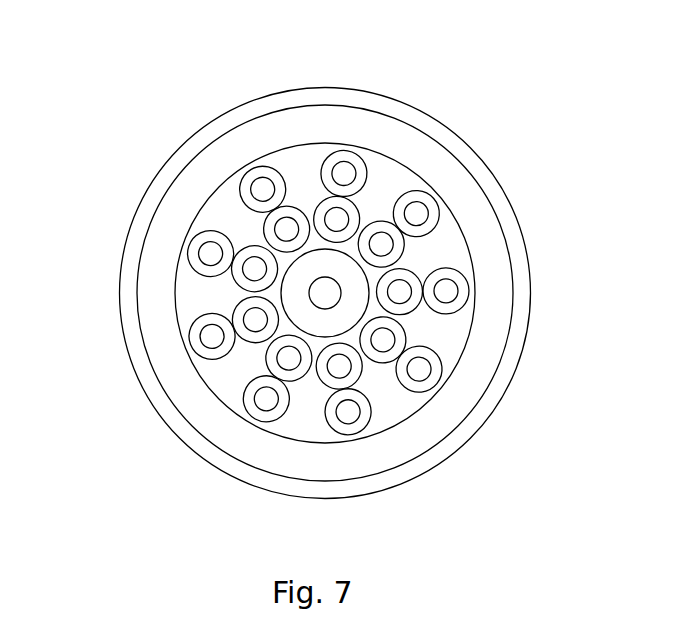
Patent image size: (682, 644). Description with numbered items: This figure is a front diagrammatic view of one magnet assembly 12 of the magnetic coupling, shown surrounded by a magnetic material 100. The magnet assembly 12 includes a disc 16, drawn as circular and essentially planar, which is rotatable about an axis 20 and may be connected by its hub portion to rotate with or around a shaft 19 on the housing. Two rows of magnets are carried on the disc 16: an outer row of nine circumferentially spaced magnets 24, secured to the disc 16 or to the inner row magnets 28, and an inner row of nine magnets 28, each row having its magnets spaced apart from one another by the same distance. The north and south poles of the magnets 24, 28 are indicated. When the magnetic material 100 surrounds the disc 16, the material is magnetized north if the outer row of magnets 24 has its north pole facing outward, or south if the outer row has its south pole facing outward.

The magnetic material 100 is at (299, 292).
The magnet assembly 12 is at (175, 293).
The disc 16 is at (250, 245).
The shaft 19 is at (408, 404).
The axis 20 is at (392, 190).
The magnets 24 is at (524, 260).
The magnets 28 is at (384, 296).